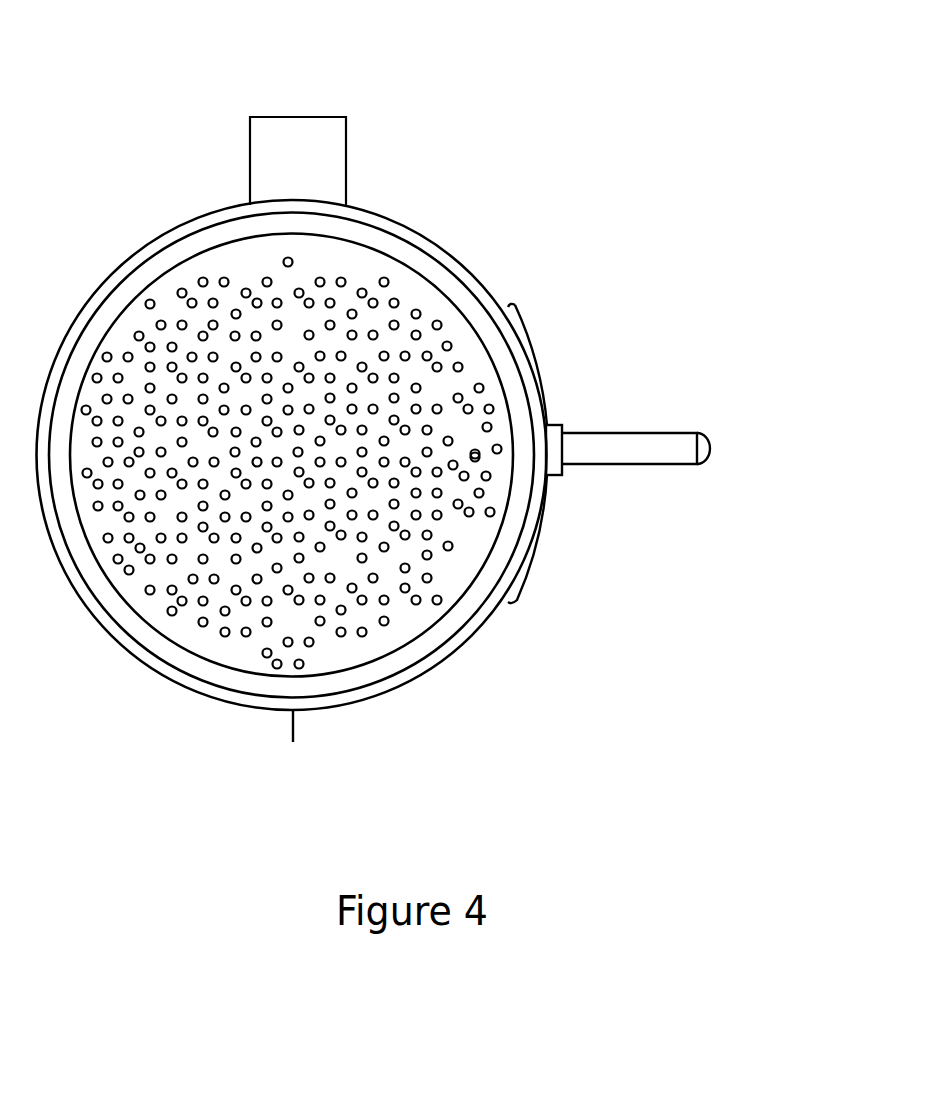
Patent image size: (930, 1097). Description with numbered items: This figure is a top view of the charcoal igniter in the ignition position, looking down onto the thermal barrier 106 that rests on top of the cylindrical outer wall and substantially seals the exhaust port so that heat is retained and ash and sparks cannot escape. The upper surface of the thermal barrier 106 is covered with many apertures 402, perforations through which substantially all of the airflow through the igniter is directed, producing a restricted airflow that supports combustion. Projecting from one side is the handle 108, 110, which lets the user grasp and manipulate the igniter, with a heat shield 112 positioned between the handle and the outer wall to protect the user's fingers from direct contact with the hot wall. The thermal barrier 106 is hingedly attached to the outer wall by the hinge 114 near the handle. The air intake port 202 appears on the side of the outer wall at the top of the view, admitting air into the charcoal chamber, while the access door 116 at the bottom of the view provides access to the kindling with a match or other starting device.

The thermal barrier 106 is at (234, 260).
The air intake port 202 is at (303, 127).
The apertures 402 is at (410, 307).
The heat shield 112 is at (555, 390).
The hinge 114 is at (562, 427).
The handle 110 is at (612, 452).
The handle 108 is at (713, 452).
The access door 116 is at (290, 722).